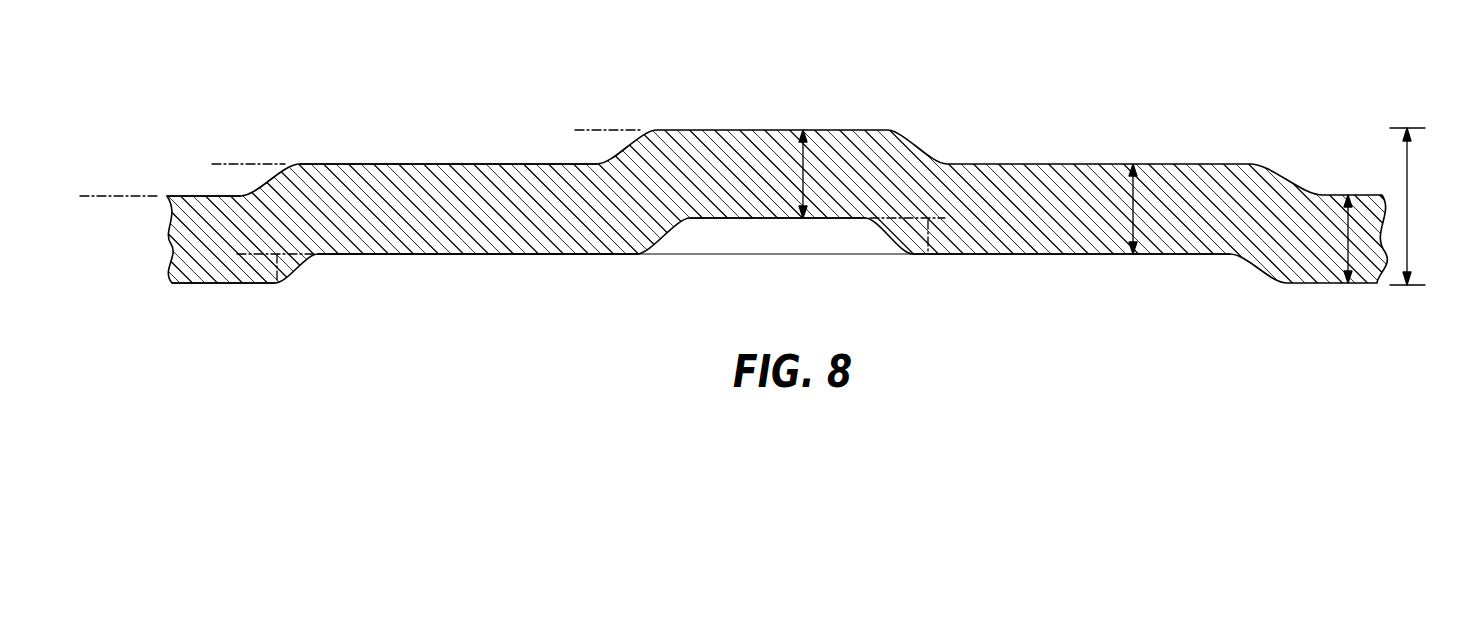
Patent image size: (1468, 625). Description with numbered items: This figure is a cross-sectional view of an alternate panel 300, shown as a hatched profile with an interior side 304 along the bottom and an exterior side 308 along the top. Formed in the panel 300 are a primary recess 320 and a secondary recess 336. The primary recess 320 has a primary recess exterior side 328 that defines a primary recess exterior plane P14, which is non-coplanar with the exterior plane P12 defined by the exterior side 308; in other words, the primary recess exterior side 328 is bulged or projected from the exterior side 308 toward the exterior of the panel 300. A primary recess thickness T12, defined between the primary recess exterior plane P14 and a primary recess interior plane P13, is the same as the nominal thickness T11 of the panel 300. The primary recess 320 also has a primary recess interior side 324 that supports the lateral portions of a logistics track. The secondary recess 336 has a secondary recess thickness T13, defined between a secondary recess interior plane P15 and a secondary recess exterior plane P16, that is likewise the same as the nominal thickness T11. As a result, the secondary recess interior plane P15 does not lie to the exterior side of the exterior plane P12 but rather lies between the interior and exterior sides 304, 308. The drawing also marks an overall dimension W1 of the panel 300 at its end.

The panel 300 is at (483, 86).
The interior side 304 is at (228, 286).
The exterior side 308 is at (196, 195).
The primary recess 320 is at (411, 270).
The primary recess interior side 324 is at (518, 256).
The primary recess exterior side 328 is at (445, 163).
The secondary recess 336 is at (729, 234).
The exterior plane P12 is at (140, 197).
The primary recess interior plane P13 is at (281, 288).
The primary recess exterior plane P14 is at (255, 163).
The secondary recess interior plane P15 is at (927, 258).
The secondary recess exterior plane P16 is at (607, 129).
The nominal thickness T11 is at (1338, 236).
The primary recess thickness T12 is at (1138, 205).
The secondary recess thickness T13 is at (805, 170).
The width W1 is at (1408, 214).